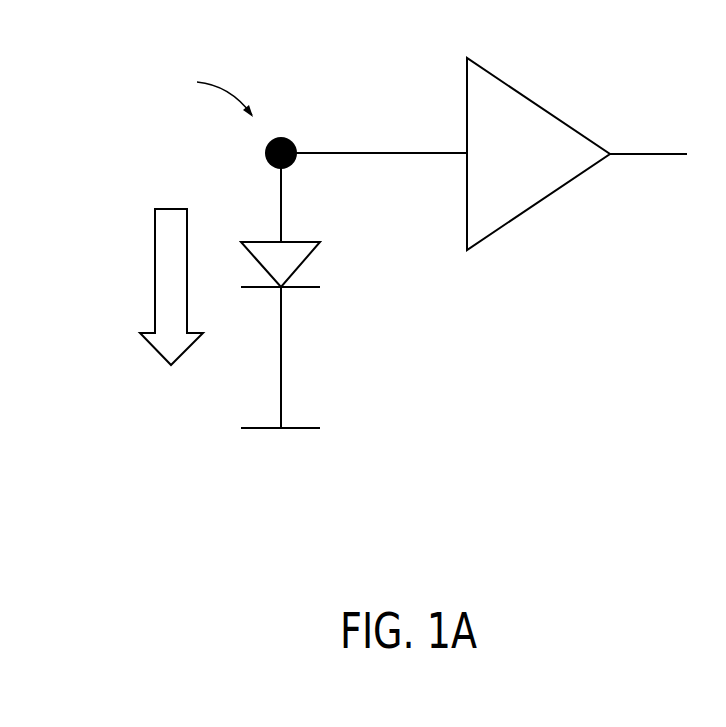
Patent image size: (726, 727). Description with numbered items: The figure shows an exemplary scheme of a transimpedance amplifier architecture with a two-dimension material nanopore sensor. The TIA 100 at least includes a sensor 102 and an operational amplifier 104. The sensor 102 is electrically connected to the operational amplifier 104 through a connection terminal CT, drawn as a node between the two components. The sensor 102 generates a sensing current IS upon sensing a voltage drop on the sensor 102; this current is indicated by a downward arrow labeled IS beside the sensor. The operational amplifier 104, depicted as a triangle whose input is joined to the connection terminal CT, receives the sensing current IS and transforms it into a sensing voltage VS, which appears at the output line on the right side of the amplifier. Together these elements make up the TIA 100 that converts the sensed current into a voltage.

The transimpedance amplifier 100 is at (502, 405).
The sensor 102 is at (308, 255).
The operational amplifier 104 is at (537, 105).